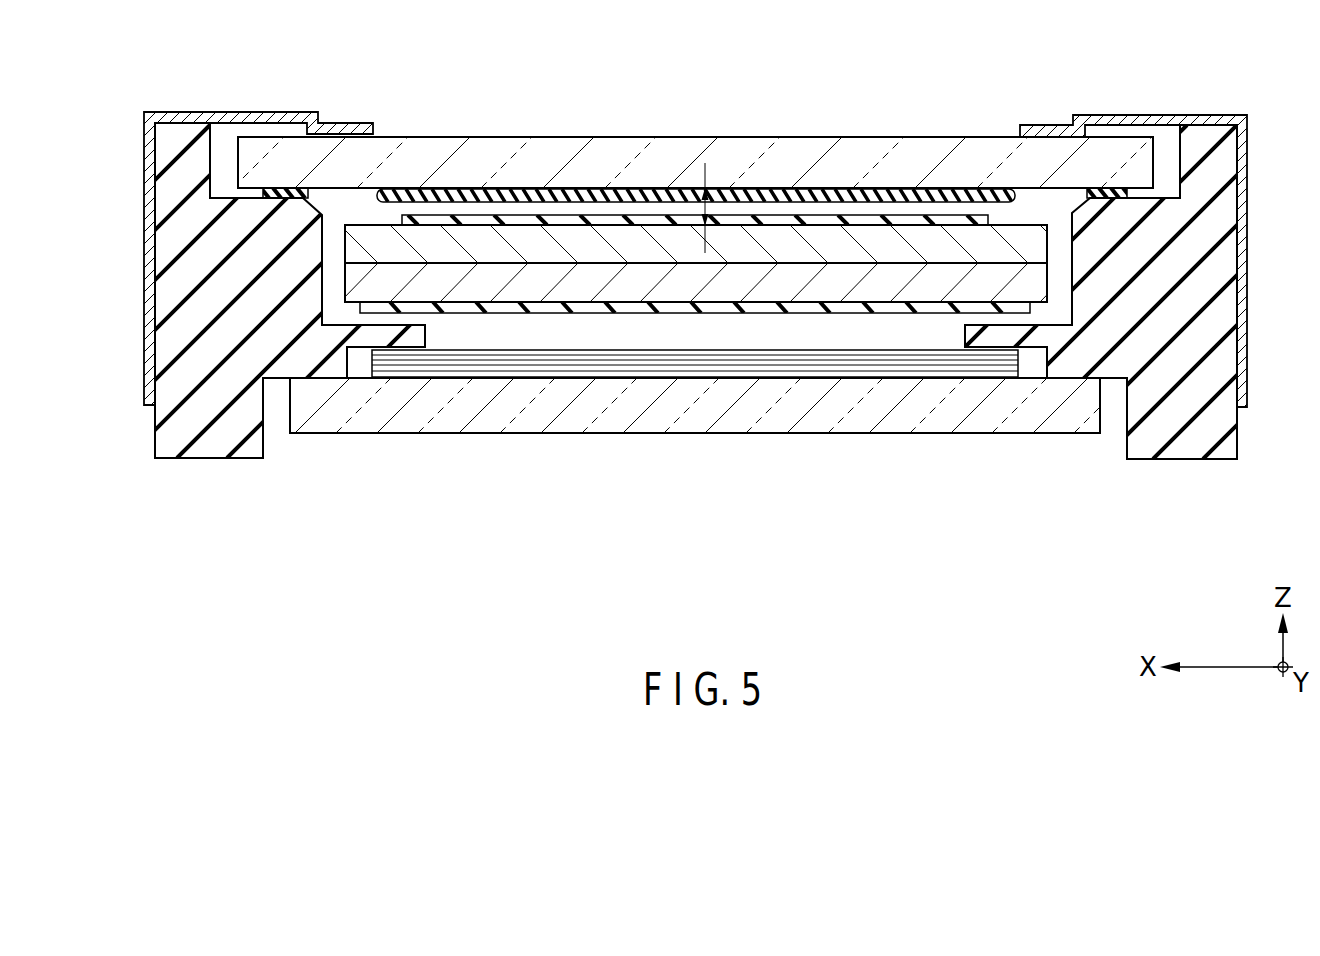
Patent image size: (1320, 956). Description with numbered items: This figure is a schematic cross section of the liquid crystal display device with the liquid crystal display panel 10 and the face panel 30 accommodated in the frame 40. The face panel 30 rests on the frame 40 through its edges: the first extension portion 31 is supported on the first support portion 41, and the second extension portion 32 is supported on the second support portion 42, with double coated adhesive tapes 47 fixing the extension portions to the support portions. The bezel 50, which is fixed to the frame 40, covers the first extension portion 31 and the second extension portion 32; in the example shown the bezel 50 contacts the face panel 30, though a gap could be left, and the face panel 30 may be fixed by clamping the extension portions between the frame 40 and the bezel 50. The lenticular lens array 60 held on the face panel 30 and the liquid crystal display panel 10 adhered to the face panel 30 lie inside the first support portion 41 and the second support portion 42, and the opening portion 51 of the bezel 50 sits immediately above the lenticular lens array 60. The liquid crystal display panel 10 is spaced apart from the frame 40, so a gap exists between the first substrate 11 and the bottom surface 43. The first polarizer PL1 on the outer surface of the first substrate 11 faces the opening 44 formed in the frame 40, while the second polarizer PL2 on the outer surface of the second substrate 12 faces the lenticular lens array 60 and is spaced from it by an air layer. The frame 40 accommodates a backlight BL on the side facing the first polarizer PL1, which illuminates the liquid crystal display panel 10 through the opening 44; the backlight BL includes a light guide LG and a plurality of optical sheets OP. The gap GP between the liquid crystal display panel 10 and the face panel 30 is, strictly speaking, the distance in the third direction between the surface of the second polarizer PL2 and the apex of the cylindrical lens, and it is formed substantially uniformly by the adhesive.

The liquid crystal display panel 10 is at (709, 391).
The first substrate 11 is at (598, 290).
The second substrate 12 is at (665, 250).
The face panel 30 is at (969, 146).
The first extension portion 31 is at (267, 138).
The second extension portion 32 is at (1113, 137).
The frame 40 is at (163, 296).
The first support portion 41 is at (252, 197).
The second support portion 42 is at (1140, 195).
The bottom surface 43 is at (372, 313).
The opening 44 is at (553, 337).
The double coated adhesive tape 47 is at (296, 188).
The bezel 50 is at (148, 204).
The opening portion 51 is at (404, 121).
The lenticular lens array 60 is at (893, 190).
The gap GP is at (711, 205).
The first polarizer PL1 is at (835, 306).
The second polarizer PL2 is at (767, 222).
The optical sheets OP is at (545, 372).
The light guide LG is at (488, 430).
The backlight BL is at (324, 438).